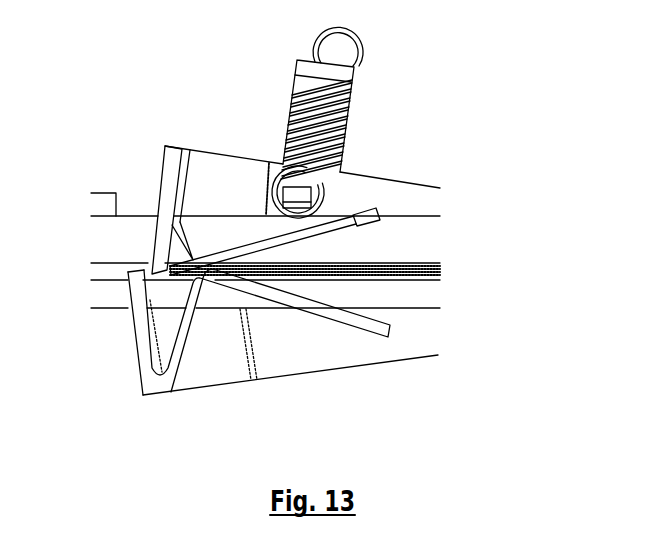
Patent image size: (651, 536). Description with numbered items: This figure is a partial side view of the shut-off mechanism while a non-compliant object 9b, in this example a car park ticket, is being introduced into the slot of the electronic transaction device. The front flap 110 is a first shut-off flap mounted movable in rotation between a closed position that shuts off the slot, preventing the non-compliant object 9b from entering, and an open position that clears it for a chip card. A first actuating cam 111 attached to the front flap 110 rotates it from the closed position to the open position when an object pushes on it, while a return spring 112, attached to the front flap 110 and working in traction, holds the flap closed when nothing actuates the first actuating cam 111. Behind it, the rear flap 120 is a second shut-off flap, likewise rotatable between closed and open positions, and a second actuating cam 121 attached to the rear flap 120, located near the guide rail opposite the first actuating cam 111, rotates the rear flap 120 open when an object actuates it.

The non-compliant object 9b is at (440, 263).
The front flap 110 is at (172, 165).
The first actuating cam 111 is at (378, 220).
The return spring 112 is at (340, 119).
The rear flap 120 is at (146, 332).
The second actuating cam 121 is at (351, 324).